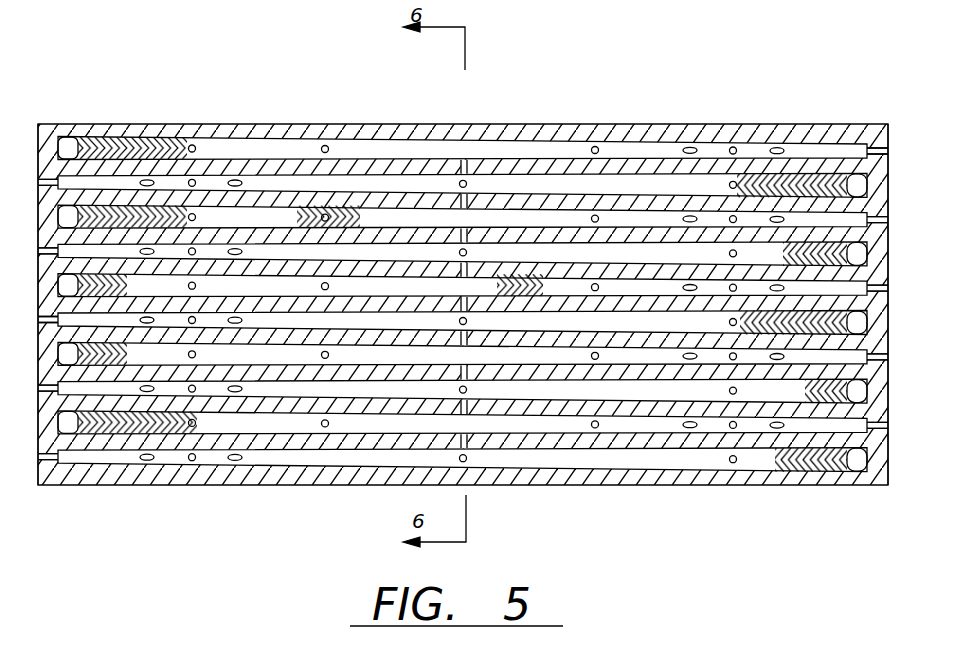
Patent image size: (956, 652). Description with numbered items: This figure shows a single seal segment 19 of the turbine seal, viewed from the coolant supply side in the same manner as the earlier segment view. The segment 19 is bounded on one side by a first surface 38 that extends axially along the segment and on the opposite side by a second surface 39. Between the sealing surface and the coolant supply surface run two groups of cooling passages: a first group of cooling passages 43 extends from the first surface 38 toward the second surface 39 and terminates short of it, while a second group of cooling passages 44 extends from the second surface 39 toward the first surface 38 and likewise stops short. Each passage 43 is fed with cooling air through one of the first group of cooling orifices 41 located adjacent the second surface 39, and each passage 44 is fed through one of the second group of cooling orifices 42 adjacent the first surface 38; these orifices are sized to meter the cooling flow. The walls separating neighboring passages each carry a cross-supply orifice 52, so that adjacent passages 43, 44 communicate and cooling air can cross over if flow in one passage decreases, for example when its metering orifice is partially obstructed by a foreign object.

The seal segment 19 is at (604, 122).
The first surface 38 is at (36, 140).
The second surface 39 is at (892, 152).
The first group of cooling orifices 41 is at (847, 243).
The second group of cooling orifices 42 is at (73, 283).
The first group of cooling passages 43 is at (275, 253).
The second group of cooling passages 44 is at (648, 220).
The cross-supply orifice 52 is at (468, 233).